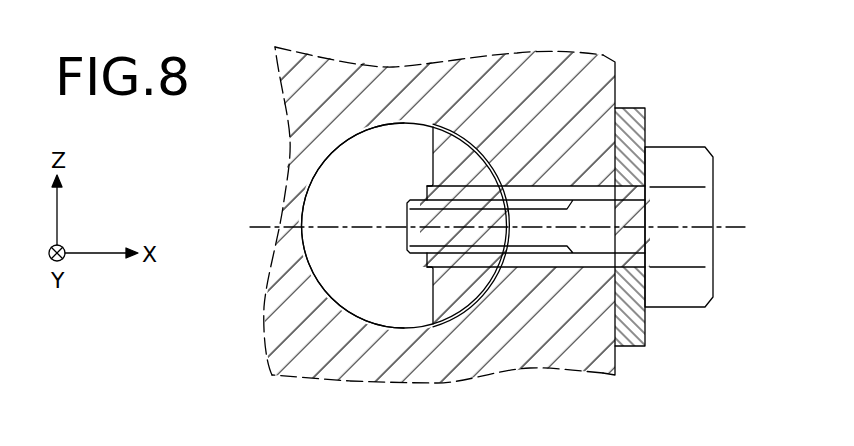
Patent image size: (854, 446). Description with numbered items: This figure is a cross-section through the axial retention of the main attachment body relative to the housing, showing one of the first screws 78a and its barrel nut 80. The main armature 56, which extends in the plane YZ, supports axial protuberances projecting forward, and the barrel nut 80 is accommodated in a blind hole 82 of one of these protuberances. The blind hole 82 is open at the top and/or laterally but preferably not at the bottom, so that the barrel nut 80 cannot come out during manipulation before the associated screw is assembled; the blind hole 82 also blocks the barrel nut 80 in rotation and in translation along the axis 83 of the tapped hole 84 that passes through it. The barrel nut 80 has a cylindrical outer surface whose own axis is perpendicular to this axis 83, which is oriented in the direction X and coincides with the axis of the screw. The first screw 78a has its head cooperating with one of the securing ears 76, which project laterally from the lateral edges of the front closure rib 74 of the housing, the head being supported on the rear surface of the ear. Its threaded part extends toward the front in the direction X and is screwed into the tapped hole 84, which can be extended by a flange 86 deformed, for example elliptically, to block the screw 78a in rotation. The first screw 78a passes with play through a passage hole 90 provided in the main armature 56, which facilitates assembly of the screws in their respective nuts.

The main armature 56 is at (570, 63).
The front closure rib 74 is at (687, 217).
The securing ears 76 is at (645, 108).
The first screw 78a is at (678, 307).
The barrel nut 80 is at (418, 181).
The blind hole 82 is at (309, 202).
The axis of the tapped hole 83 is at (334, 227).
The tapped hole 84 is at (447, 250).
The flange 86 is at (427, 267).
The passage hole 90 is at (556, 188).